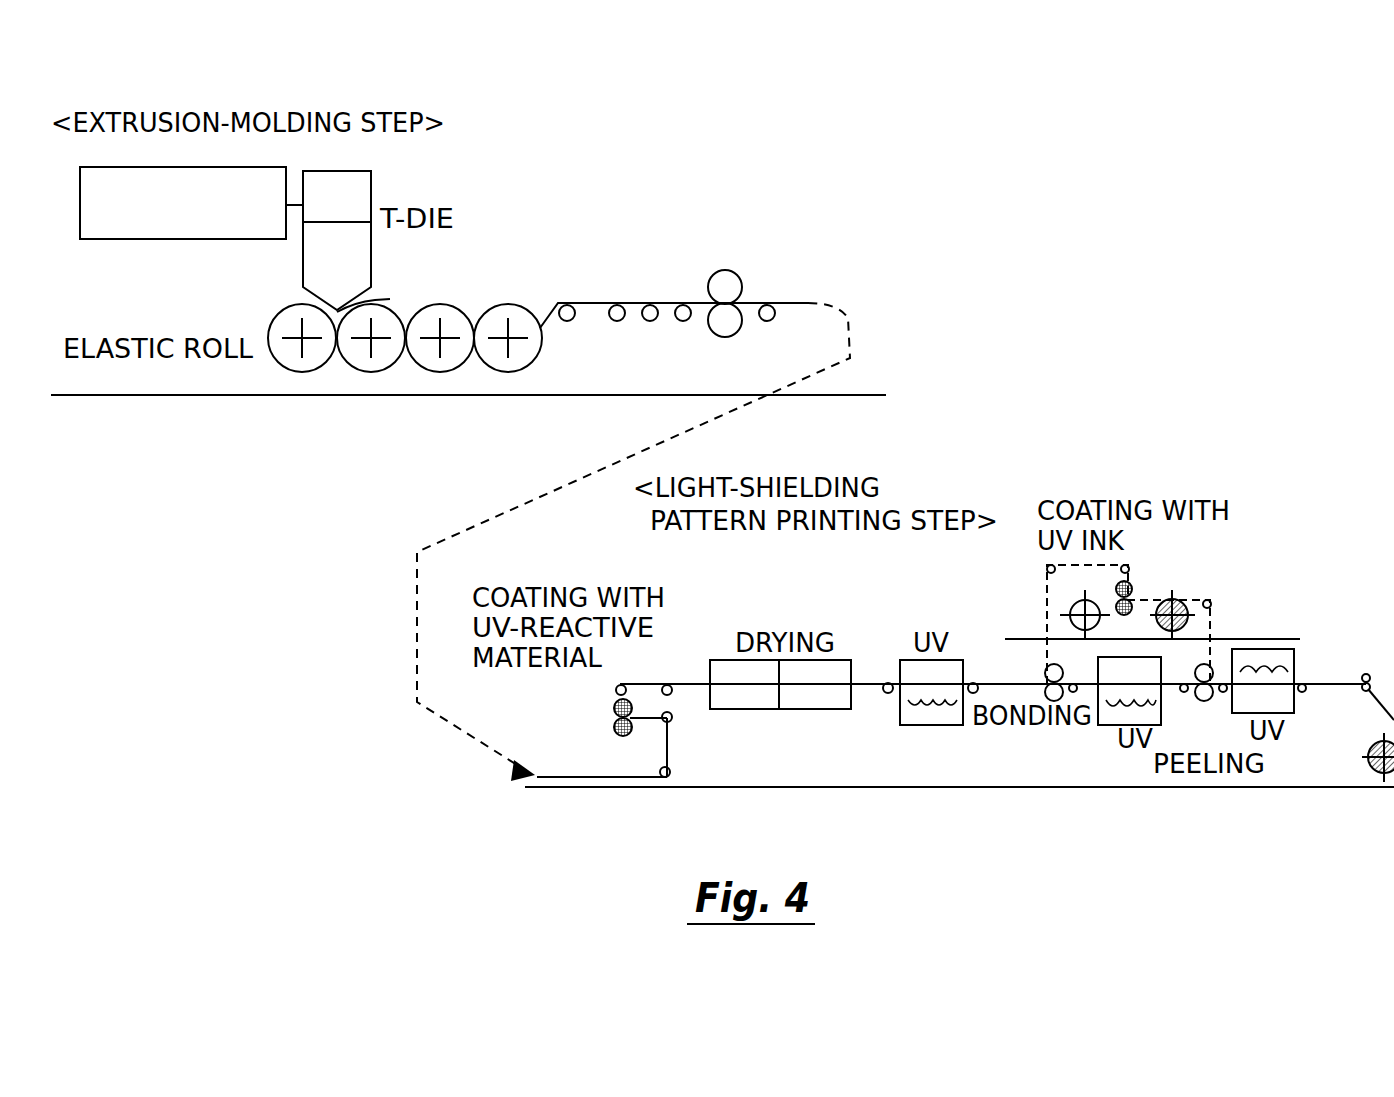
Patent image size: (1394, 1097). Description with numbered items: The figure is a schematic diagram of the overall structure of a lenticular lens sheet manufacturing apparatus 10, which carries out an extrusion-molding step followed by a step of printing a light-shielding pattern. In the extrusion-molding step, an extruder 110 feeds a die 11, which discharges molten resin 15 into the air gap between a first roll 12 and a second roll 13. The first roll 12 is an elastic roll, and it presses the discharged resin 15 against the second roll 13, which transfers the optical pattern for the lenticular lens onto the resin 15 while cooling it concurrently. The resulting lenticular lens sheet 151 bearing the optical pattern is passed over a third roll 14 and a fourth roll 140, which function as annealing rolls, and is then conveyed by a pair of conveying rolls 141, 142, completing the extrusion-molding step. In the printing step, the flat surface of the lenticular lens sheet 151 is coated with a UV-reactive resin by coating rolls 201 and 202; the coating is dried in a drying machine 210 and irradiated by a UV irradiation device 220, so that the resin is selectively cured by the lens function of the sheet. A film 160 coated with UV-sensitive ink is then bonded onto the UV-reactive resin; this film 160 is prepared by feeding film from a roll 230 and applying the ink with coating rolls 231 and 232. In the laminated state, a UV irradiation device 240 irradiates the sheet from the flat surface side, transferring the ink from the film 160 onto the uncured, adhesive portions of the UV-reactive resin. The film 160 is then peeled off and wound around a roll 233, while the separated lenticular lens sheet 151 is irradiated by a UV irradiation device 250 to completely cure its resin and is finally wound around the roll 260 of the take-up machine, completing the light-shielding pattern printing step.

The lenticular lens sheet manufacturing apparatus 10 is at (477, 182).
The die 11 is at (355, 200).
The extruder 110 is at (138, 222).
The first roll 12 is at (280, 330).
The second roll 13 is at (368, 360).
The third roll 14 is at (440, 360).
The molten resin 15 is at (388, 300).
The fourth roll 140 is at (515, 318).
The conveying roll 141 is at (728, 285).
The conveying roll 142 is at (720, 325).
The lenticular lens sheet 151 is at (588, 300).
The film 160 is at (1045, 616).
The coating roll 201 is at (614, 708).
The coating roll 202 is at (614, 728).
The drying machine 210 is at (752, 708).
The UV irradiation device 220 is at (905, 715).
The roll 230 is at (1073, 605).
The coating roll 231 is at (1132, 606).
The coating roll 232 is at (1132, 585).
The roll 233 is at (1185, 612).
The UV irradiation device 240 is at (1105, 722).
The UV irradiation device 250 is at (1287, 695).
The roll 260 is at (1378, 773).